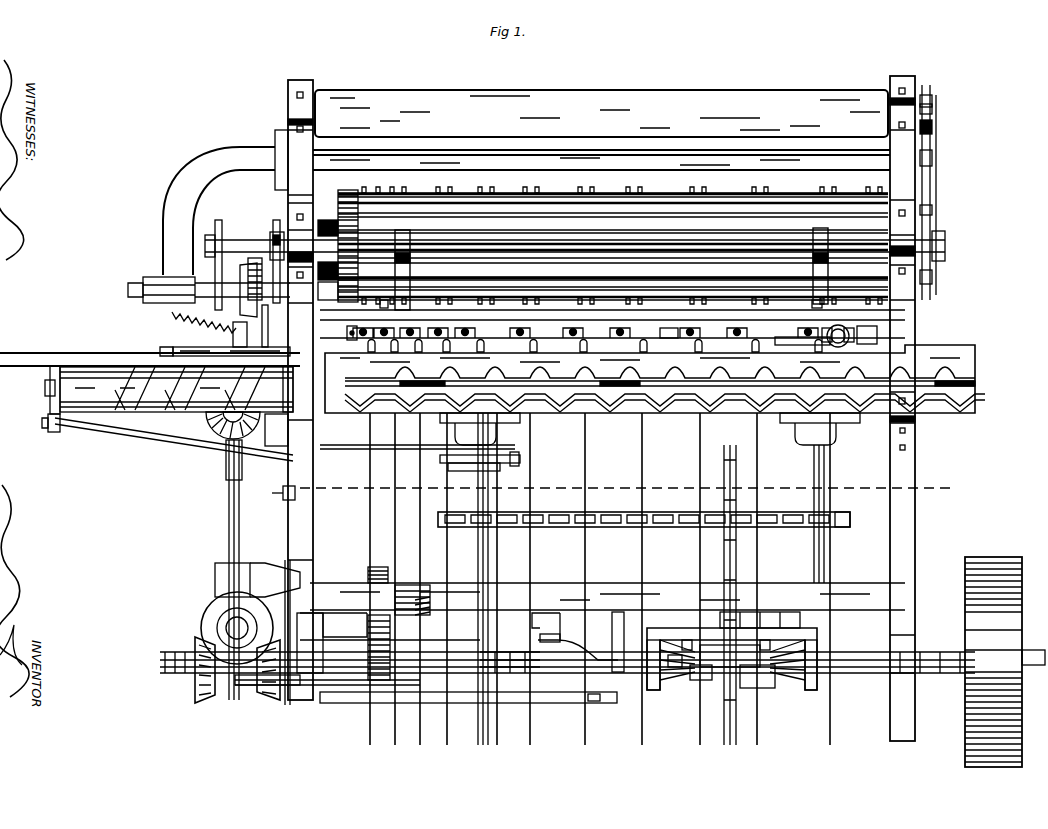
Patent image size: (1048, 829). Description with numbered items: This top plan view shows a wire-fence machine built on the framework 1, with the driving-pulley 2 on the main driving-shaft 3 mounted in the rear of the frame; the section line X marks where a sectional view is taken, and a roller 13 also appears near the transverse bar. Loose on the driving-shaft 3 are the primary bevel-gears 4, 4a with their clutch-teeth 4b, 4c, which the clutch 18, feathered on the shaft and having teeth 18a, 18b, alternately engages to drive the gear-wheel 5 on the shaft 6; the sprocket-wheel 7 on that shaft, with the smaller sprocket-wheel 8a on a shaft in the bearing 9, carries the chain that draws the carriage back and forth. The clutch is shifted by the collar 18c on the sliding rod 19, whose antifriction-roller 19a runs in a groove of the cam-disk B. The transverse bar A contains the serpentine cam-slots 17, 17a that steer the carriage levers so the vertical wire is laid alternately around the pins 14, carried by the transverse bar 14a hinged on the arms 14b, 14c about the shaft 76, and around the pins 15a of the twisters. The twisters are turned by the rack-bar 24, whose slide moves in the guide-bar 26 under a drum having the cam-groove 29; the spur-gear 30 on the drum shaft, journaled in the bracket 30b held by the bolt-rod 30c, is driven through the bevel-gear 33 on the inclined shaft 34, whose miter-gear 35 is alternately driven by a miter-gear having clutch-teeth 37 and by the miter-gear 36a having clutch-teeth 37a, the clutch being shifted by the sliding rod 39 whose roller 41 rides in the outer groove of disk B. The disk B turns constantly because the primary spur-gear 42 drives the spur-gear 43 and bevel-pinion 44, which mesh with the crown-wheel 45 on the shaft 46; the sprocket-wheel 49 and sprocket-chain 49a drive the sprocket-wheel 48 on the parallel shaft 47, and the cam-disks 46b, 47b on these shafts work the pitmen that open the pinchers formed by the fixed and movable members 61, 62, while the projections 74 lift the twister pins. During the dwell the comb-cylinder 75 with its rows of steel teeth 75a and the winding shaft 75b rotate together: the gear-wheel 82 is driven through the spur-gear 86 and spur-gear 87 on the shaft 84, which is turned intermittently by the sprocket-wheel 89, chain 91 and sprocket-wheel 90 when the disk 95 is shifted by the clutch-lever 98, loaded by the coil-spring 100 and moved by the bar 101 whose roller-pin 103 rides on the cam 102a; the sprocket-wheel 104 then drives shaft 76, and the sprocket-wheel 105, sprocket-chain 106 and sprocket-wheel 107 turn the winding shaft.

The framework 1 is at (292, 393).
The driving-pulley 2 is at (1005, 662).
The main driving-shaft 3 is at (344, 658).
The primary bevel-gear 4 is at (812, 688).
The primary bevel-gear 4a is at (662, 690).
The clutch-teeth 4b is at (790, 682).
The clutch-teeth 4c is at (676, 685).
The gear-wheel 5 is at (780, 633).
The shaft 6 is at (782, 514).
The sprocket-wheel 7 is at (560, 553).
The sprocket-wheel 8a is at (164, 342).
The bearing 9 is at (468, 697).
The roller 13 is at (838, 348).
The pins 14 is at (478, 324).
The transverse bar 14a is at (673, 321).
The arm 14b is at (388, 303).
The arm 14c is at (822, 302).
The pin 15a is at (595, 350).
The cam-slot 17 is at (568, 378).
The cam-slot 17a is at (688, 400).
The clutch 18 is at (724, 685).
The clutch teeth 18a is at (696, 690).
The clutch teeth 18b is at (760, 685).
The collar 18c is at (738, 690).
The sliding rod 19 is at (598, 660).
The antifriction-roller 19a is at (566, 652).
The rack-bar 24 is at (147, 389).
The guide-bar 26 is at (66, 360).
The cam-groove 29 is at (120, 367).
The spur-gear 30 is at (290, 403).
The bracket 30b is at (56, 410).
The bolt-rod 30c is at (142, 447).
The bevel-gear 33 is at (205, 429).
The inclined shaft 34 is at (240, 528).
The miter-gear 35 is at (212, 614).
The miter-gear 36a is at (265, 700).
The clutch-teeth 37 is at (231, 631).
The clutch-teeth 37a is at (246, 643).
The sliding rod 39 is at (316, 700).
The antifriction-roller 41 is at (415, 685).
The primary spur-gear 42 is at (390, 644).
The spur-gear 43 is at (370, 572).
The bevel-pinion 44 is at (406, 589).
The crown-wheel 45 is at (430, 620).
The shaft 46 is at (468, 579).
The cam-disk 46b is at (493, 423).
The shaft 47 is at (760, 595).
The cam-disk 47b is at (836, 423).
The sprocket-wheel 48 is at (801, 518).
The sprocket-wheel 49 is at (482, 520).
The sprocket-chain 49a is at (606, 518).
The fixed pincher member 61 is at (363, 324).
The movable pincher member 62 is at (354, 347).
The projections 74 is at (800, 348).
The comb-cylinder 75 is at (735, 231).
The steel teeth 75a is at (514, 192).
The winding shaft 75b is at (601, 113).
The shaft 76 is at (247, 239).
The gear-wheel 82 is at (350, 197).
The shaft 84 is at (218, 265).
The spur-gear 86 is at (327, 220).
The spur-gear 87 is at (337, 295).
The sprocket-wheel 89 is at (264, 327).
The sprocket-wheel 90 is at (286, 710).
The chain 91 is at (275, 493).
The disk 95 is at (248, 334).
The clutch-lever 98 is at (234, 347).
The coil-spring 100 is at (198, 322).
The bar 101 is at (417, 459).
The cam 102a is at (495, 465).
The roller-pin 103 is at (520, 457).
The sprocket-wheel 104 is at (246, 268).
The sprocket-wheel 105 is at (933, 262).
The sprocket-chain 106 is at (933, 158).
The sprocket-wheel 107 is at (931, 118).
The transverse bar A is at (592, 365).
The cam-disk B is at (500, 662).
The section line X is at (625, 490).